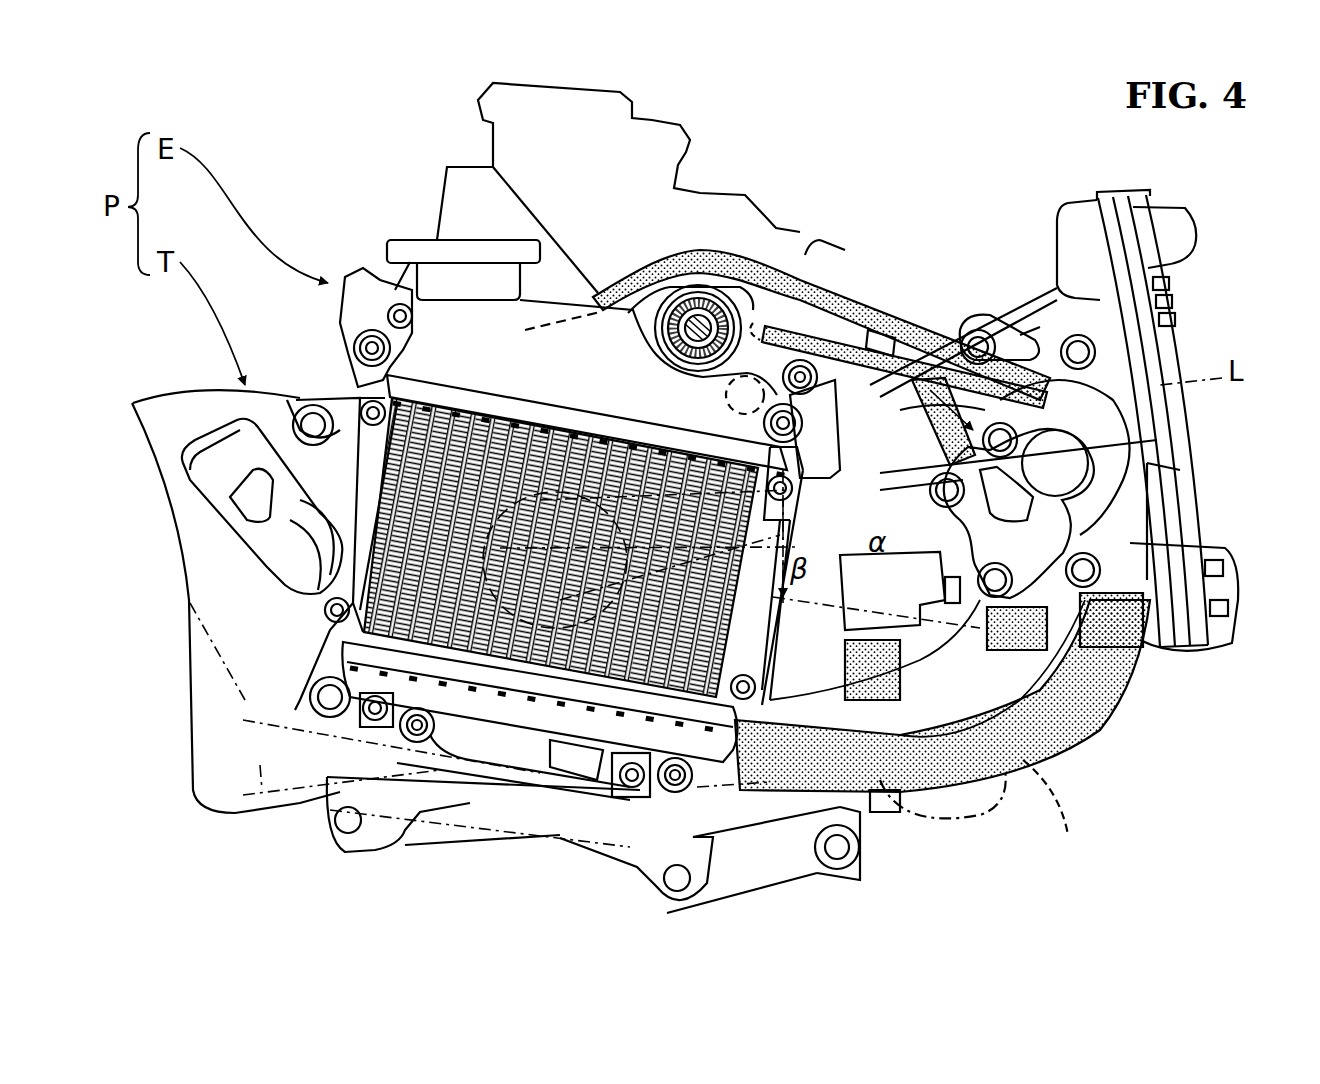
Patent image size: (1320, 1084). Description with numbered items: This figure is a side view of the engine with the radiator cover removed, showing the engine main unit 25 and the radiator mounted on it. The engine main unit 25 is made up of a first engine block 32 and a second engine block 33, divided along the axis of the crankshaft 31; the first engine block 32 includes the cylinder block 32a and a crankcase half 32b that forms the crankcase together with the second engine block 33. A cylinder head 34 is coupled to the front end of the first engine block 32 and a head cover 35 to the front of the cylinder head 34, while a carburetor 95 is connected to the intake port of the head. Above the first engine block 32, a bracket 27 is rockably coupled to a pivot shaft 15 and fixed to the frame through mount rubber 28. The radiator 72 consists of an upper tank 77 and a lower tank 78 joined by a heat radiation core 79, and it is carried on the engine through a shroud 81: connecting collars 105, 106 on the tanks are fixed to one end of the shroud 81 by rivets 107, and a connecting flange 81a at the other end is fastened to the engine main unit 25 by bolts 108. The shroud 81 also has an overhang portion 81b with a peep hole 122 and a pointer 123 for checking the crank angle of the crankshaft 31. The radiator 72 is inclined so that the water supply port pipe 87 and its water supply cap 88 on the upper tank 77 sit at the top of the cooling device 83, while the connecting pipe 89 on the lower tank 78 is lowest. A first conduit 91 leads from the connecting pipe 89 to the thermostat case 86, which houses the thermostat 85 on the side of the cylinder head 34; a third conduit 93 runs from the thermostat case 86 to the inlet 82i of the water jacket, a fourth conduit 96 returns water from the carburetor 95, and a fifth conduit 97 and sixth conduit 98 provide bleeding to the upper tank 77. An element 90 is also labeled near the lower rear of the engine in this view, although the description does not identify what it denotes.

The pivot shaft 15 is at (700, 298).
The engine main unit 25 is at (997, 290).
The bracket 27 is at (747, 320).
The mount rubber 28 is at (689, 300).
The crankshaft 31 is at (520, 670).
The first engine block 32 is at (850, 300).
The cylinder block 32a is at (880, 335).
The crankcase half 32b is at (885, 805).
The second engine block 33 is at (400, 850).
The cylinder head 34 is at (1047, 327).
The head cover 35 is at (1185, 385).
The radiator 72 is at (582, 547).
The upper tank 77 is at (603, 330).
The lower tank 78 is at (527, 682).
The heat radiation core 79 is at (565, 568).
The shroud 81 is at (362, 520).
The connecting flange 81a is at (345, 372).
The overhang portion 81b is at (812, 598).
The inlet of water jacket 82i is at (984, 679).
The cooling device 83 is at (1118, 718).
The thermostat 85 is at (1080, 543).
The thermostat case 86 is at (1150, 478).
The water supply port pipe 87 is at (498, 292).
The water supply cap 88 is at (515, 240).
The connecting pipe 89 is at (710, 860).
The cowl line 90 is at (982, 820).
The first conduit 91 is at (1023, 762).
The third conduit 93 is at (1125, 722).
The carburetor 95 is at (650, 125).
The fourth conduit 96 is at (967, 305).
The fifth conduit 97 is at (1065, 350).
The sixth conduit 98 is at (790, 245).
The connecting collar 105 is at (392, 288).
The connecting collar 106 is at (372, 745).
The rivet 107 is at (372, 340).
The bolt 108 is at (805, 360).
The peep hole 122 is at (875, 684).
The pointer 123 is at (665, 554).